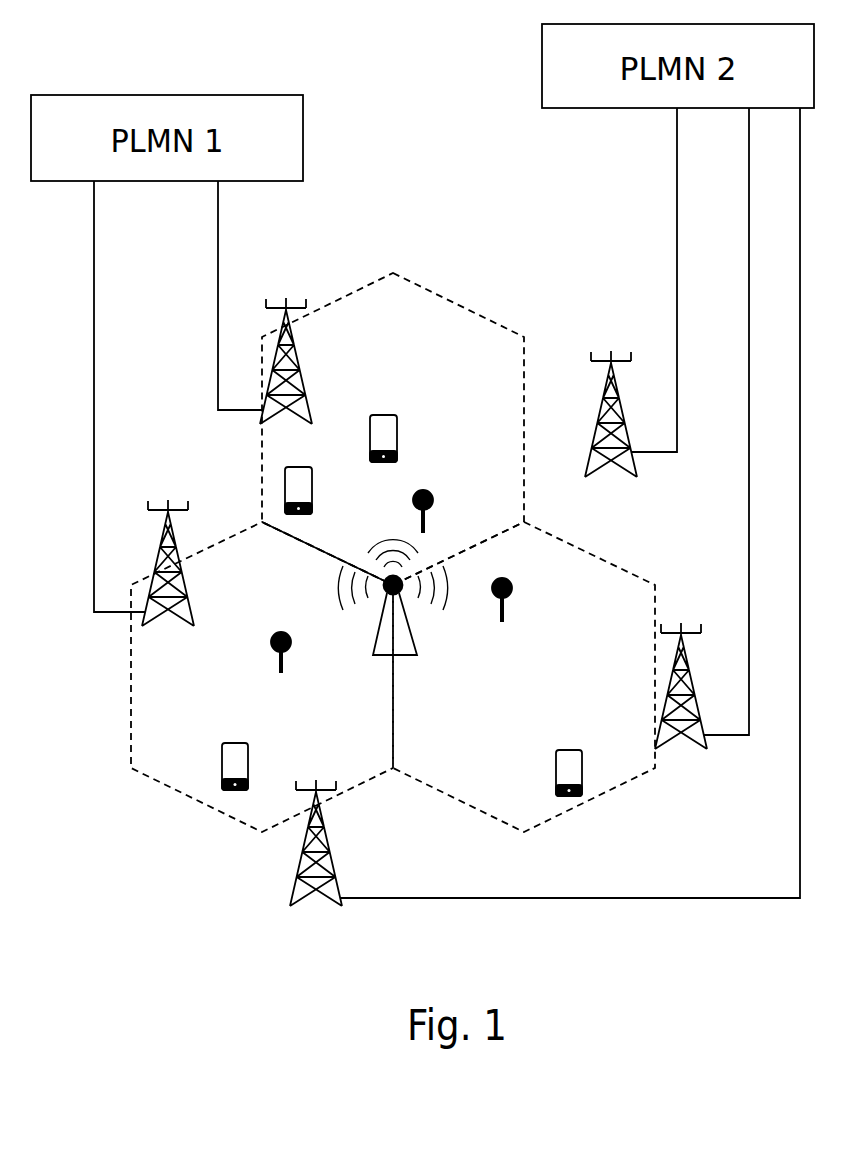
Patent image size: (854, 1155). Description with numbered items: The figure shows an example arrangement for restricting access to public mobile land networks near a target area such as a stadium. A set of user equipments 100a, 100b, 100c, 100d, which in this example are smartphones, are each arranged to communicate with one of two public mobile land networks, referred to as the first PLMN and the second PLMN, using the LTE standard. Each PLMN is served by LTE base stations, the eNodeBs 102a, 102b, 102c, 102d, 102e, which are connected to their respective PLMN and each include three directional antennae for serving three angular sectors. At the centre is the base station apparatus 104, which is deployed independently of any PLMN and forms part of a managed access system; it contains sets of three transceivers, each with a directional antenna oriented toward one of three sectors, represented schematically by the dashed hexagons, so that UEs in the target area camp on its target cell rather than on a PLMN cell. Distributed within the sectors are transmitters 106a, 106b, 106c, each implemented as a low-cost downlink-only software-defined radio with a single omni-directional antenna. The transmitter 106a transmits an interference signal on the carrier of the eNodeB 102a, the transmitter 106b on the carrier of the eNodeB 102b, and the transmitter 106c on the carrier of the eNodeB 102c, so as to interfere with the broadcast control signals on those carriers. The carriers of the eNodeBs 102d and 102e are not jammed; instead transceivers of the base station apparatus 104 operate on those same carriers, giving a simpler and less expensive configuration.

The user equipment 100a is at (383, 412).
The user equipment 100b is at (286, 490).
The user equipment 100c is at (221, 775).
The user equipment 100d is at (581, 794).
The eNodeB 102a is at (286, 305).
The eNodeB 102b is at (608, 363).
The eNodeB 102c is at (668, 750).
The eNodeB 102d is at (294, 891).
The eNodeB 102e is at (154, 628).
The base station apparatus 104 is at (408, 628).
The transmitter 106a is at (432, 496).
The transmitter 106b is at (507, 592).
The transmitter 106c is at (283, 660).